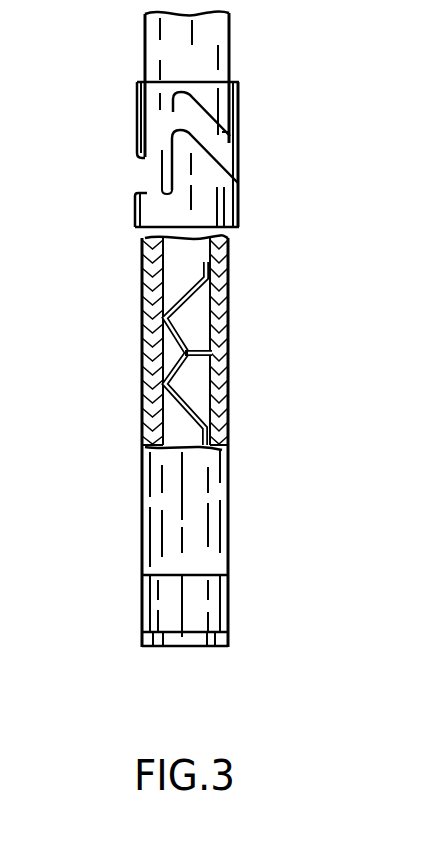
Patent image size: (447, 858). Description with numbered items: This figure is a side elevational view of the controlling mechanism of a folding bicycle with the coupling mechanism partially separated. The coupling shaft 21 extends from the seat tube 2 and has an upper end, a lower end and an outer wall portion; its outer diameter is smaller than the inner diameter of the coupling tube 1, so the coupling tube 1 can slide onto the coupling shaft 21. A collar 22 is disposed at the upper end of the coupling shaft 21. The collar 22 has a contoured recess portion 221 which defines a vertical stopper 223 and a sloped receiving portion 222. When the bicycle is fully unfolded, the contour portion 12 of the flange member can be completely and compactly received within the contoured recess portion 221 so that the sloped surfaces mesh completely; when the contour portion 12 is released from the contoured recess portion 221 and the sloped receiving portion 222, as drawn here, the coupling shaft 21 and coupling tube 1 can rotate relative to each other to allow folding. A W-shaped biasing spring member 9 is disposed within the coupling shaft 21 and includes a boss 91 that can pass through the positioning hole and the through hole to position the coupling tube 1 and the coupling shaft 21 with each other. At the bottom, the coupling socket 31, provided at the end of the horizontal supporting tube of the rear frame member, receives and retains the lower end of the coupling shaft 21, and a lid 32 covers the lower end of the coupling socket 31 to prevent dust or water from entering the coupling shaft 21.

The coupling tube 1 is at (150, 347).
The seat tube 2 is at (200, 50).
The biasing spring member 9 is at (142, 400).
The contour portion 12 is at (165, 160).
The coupling shaft 21 is at (220, 157).
The collar 22 is at (237, 102).
The coupling socket 31 is at (182, 605).
The lid 32 is at (147, 647).
The boss 91 is at (225, 366).
The contoured recess portion 221 is at (183, 107).
The sloped receiving portion 222 is at (210, 138).
The vertical stopper 223 is at (170, 130).